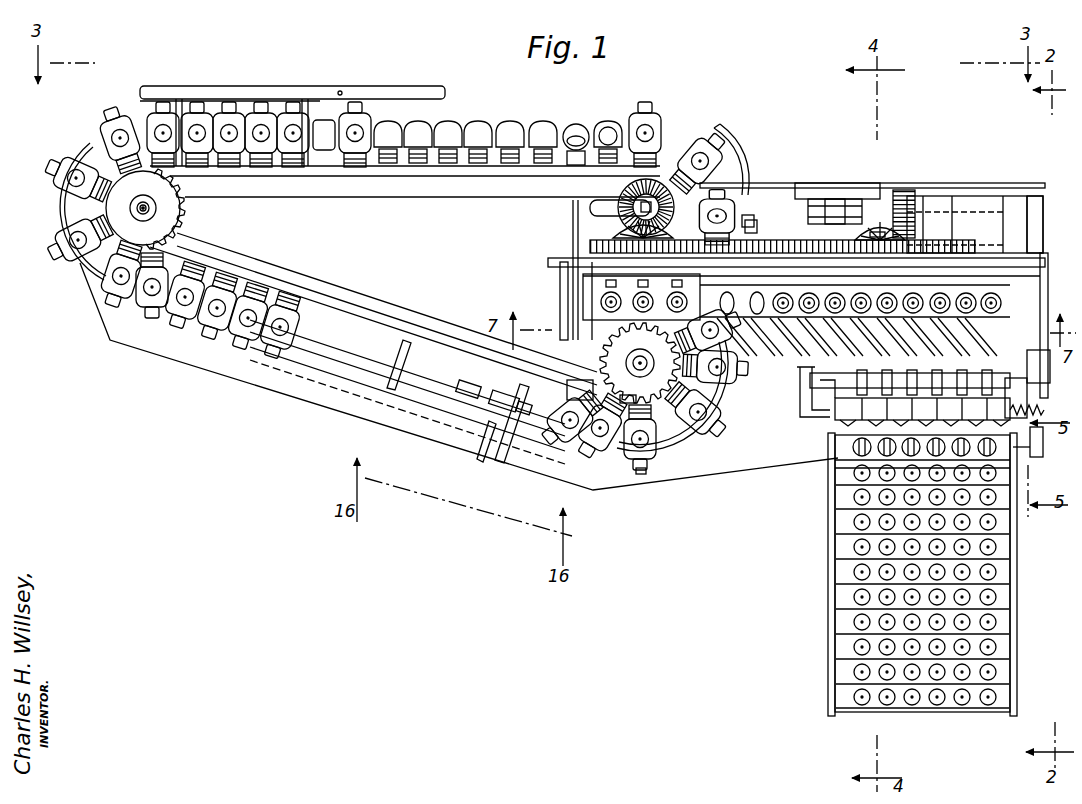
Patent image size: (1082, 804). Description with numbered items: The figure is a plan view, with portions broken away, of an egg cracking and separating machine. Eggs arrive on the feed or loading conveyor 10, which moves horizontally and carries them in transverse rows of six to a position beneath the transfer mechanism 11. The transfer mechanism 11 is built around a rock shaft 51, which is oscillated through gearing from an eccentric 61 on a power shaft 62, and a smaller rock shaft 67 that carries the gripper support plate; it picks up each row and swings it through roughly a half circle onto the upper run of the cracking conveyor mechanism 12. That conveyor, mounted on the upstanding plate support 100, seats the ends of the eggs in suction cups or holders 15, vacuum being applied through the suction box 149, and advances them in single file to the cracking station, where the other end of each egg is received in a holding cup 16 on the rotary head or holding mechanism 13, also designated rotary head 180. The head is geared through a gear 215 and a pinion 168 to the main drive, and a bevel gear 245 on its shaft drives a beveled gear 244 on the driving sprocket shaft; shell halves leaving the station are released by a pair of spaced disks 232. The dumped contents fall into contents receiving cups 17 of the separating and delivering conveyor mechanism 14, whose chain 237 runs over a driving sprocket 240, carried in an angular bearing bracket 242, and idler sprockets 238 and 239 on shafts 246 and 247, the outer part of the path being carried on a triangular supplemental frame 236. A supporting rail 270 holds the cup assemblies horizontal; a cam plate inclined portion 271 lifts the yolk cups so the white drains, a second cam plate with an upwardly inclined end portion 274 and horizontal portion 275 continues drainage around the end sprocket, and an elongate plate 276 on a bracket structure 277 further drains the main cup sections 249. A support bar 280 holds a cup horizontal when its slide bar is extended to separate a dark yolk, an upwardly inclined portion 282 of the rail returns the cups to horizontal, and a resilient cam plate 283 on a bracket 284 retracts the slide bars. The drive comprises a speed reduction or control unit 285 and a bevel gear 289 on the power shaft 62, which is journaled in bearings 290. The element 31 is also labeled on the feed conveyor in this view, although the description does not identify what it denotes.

The feed or loading conveyor 10 is at (899, 574).
The transfer mechanism 11 is at (798, 408).
The egg supporting or cracking conveyor mechanism 12 is at (1012, 292).
The rotary head or holding mechanism 13 is at (603, 329).
The separating and delivering conveyor mechanism 14 is at (645, 474).
The suction cups or holders 15 is at (862, 292).
The holding cup 16 is at (700, 296).
The contents receiving cup or receptacle 17 is at (694, 441).
The tray holes 31 is at (855, 601).
The rock shaft 51 is at (952, 376).
The eccentric 61 is at (1043, 213).
The power shaft 62 is at (967, 204).
The smaller rock shaft 67 is at (842, 410).
The upstanding plate support 100 is at (552, 263).
The suction box 149 is at (800, 268).
The pinion 168 is at (669, 207).
The rotary head 180 is at (598, 280).
The gear 215 is at (592, 247).
The spaced disks 232 is at (583, 298).
The triangular supplemental frame 236 is at (396, 308).
The chain 237 is at (318, 282).
The idler sprocket 238 is at (630, 390).
The idler sprocket 239 is at (120, 207).
The driving sprocket 240 is at (590, 186).
The angular bearing bracket 242 is at (600, 212).
The beveled gear 244 is at (692, 142).
The bevel gear 245 is at (612, 233).
The shaft 246 is at (636, 358).
The shaft 247 is at (160, 211).
The main cup sections 249 is at (410, 134).
The supporting rail 270 is at (96, 268).
The cam plate inclined portion 271 is at (532, 416).
The upwardly inclined end portion 274 is at (470, 396).
The horizontal portion 275 is at (357, 358).
The elongate plate 276 is at (258, 99).
The bracket structure 277 is at (196, 98).
The support bar 280 is at (405, 88).
The upwardly inclined portion 282 is at (728, 140).
The resilient cam plate 283 is at (750, 210).
The bracket 284 is at (766, 222).
The speed reduction or control unit 285 is at (841, 183).
The bevel gear 289 is at (912, 190).
The bearings 290 is at (1003, 233).